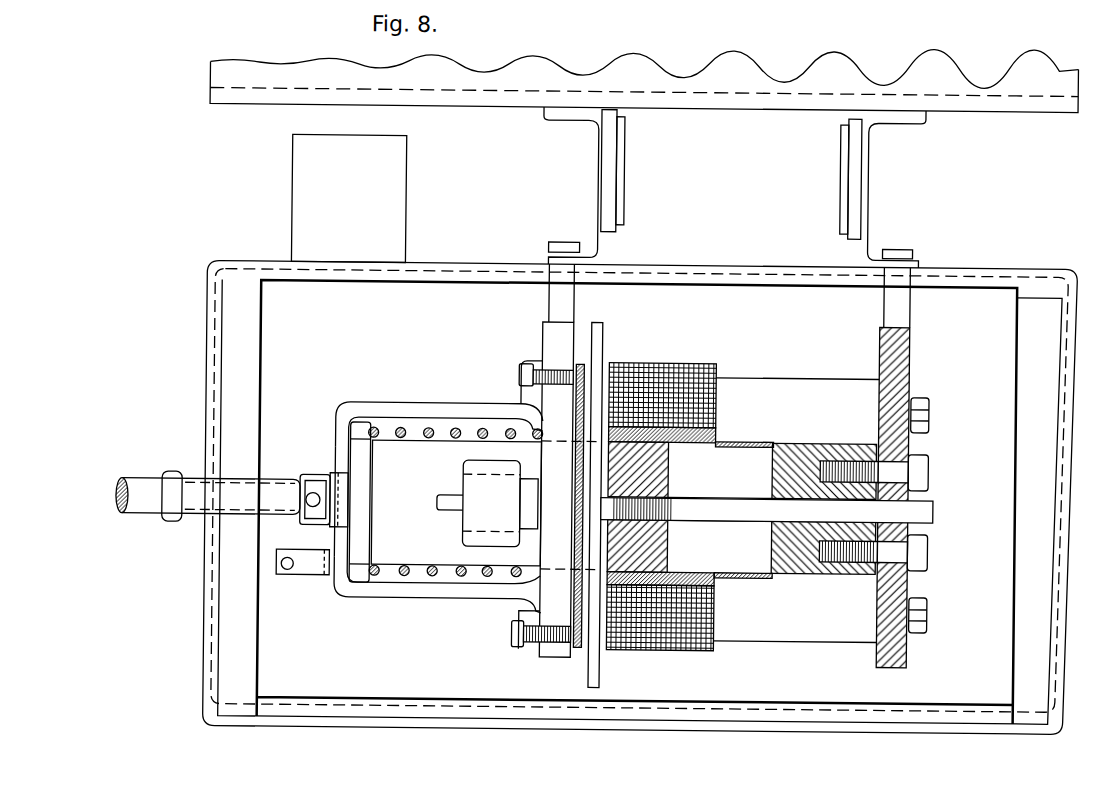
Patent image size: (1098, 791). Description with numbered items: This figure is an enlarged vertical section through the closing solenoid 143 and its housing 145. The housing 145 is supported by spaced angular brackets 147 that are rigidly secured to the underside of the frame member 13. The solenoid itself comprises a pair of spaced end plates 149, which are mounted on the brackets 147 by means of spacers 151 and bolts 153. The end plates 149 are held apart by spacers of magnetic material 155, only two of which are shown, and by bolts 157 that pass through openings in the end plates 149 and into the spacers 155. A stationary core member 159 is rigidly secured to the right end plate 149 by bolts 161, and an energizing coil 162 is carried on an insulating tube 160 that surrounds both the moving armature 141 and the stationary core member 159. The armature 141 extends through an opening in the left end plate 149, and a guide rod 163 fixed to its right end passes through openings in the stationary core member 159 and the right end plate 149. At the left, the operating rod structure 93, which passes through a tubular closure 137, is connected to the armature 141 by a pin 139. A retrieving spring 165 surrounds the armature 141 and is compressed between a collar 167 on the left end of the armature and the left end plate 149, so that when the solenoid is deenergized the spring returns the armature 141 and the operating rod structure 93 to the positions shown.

The frame member 13 is at (1019, 106).
The operating rod structure 93 is at (196, 463).
The tubular closure 137 is at (186, 527).
The pin 139 is at (303, 489).
The moving armature 141 is at (462, 490).
The closing solenoid 143 is at (748, 312).
The housing 145 is at (218, 650).
The angular bracket 147 is at (593, 148).
The end plate 149 is at (541, 338).
The spacer 151 is at (572, 302).
The bolt 153 is at (548, 245).
The spacer of magnetic material 155 is at (807, 377).
The bolt 157 is at (929, 417).
The stationary core member 159 is at (772, 457).
The insulating tube 160 is at (716, 440).
The bolt 161 is at (929, 462).
The energizing coil 162 is at (716, 385).
The guide rod 163 is at (931, 510).
The retrieving spring 165 is at (457, 428).
The collar 167 is at (343, 418).